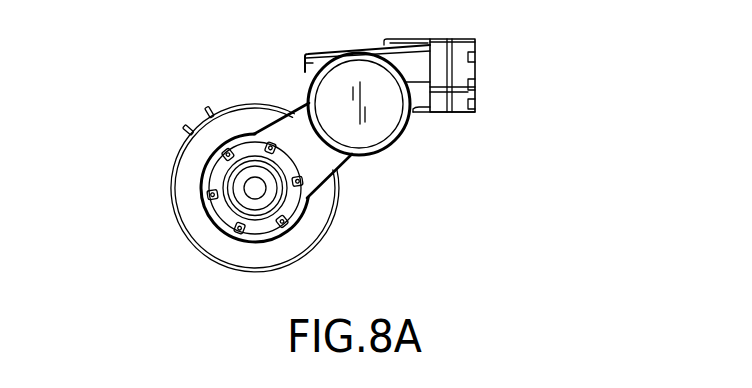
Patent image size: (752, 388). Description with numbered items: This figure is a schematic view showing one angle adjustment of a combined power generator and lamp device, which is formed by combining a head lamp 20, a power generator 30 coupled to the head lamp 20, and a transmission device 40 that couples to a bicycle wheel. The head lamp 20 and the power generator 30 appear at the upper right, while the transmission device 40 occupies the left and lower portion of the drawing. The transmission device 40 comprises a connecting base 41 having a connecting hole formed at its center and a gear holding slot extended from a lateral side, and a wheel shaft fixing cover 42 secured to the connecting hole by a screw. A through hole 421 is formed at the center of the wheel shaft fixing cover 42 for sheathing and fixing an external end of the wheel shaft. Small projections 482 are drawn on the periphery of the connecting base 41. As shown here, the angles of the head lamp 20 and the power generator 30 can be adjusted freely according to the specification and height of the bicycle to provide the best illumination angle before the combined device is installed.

The head lamp 20 is at (497, 70).
The power generator 30 is at (377, 116).
The transmission device 40 is at (146, 148).
The connecting base 41 is at (188, 195).
The wheel shaft fixing cover 42 is at (227, 212).
The through hole 421 is at (255, 190).
The positioning pins 482 is at (184, 129).